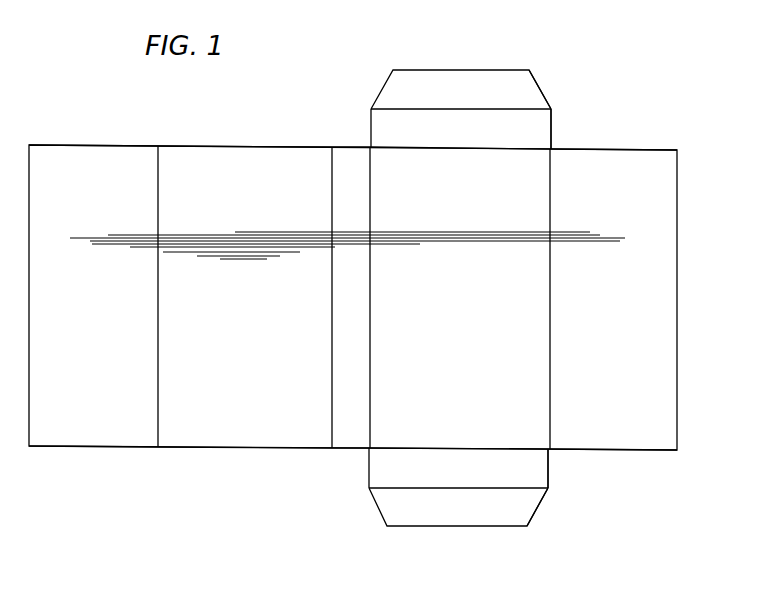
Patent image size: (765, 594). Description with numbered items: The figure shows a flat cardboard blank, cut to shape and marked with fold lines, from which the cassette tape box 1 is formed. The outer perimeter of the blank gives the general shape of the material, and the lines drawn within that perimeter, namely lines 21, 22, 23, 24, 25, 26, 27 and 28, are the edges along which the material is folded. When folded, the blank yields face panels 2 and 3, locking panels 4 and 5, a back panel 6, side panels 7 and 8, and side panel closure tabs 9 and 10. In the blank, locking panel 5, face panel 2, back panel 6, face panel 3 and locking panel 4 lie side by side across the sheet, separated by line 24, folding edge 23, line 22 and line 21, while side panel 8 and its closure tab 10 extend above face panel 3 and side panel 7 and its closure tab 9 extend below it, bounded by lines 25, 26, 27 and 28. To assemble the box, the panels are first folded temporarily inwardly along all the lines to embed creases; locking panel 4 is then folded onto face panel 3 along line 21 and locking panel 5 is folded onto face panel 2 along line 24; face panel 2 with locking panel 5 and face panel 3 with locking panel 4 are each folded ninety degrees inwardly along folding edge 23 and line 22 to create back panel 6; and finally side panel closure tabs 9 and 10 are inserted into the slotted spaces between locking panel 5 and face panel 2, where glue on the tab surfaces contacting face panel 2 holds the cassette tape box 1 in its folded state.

The cassette tape box 1 is at (636, 127).
The face panel 2 is at (248, 298).
The face panel 3 is at (464, 304).
The locking panel 4 is at (616, 311).
The locking panel 5 is at (101, 304).
The back panel 6 is at (352, 435).
The side panel 7 is at (408, 473).
The side panel 8 is at (378, 132).
The side panel closure tab 9 is at (433, 515).
The side panel closure tab 10 is at (390, 97).
The fold line 21 is at (550, 354).
The fold line 22 is at (370, 350).
The folding edge 23 is at (331, 350).
The fold line 24 is at (158, 354).
The fold line 25 is at (525, 108).
The fold line 26 is at (528, 149).
The fold line 27 is at (530, 450).
The fold line 28 is at (530, 490).